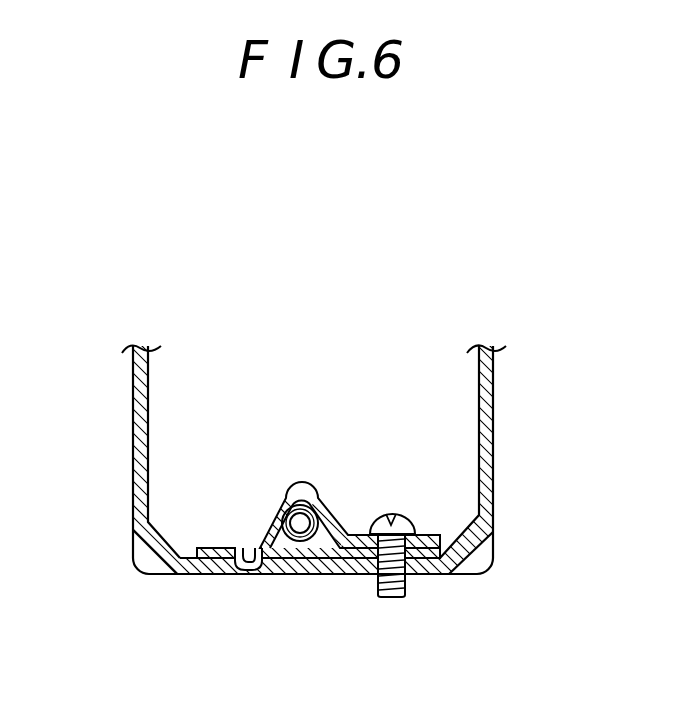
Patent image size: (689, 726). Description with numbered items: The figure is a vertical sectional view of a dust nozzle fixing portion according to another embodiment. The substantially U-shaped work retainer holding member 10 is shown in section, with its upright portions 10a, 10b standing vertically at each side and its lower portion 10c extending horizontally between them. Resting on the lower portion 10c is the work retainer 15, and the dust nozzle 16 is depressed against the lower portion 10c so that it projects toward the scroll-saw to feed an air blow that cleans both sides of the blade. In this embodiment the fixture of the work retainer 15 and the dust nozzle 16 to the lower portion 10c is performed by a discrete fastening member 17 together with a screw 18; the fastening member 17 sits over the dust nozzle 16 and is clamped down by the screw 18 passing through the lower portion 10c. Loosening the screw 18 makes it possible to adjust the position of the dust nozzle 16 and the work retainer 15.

The work retainer holding member 10 is at (494, 455).
The upright portion 10a is at (132, 437).
The upright portion 10b is at (494, 394).
The lower portion 10c is at (293, 577).
The work retainer 15 is at (215, 548).
The dust nozzle 16 is at (298, 497).
The fastening member 17 is at (327, 508).
The screw 18 is at (393, 598).